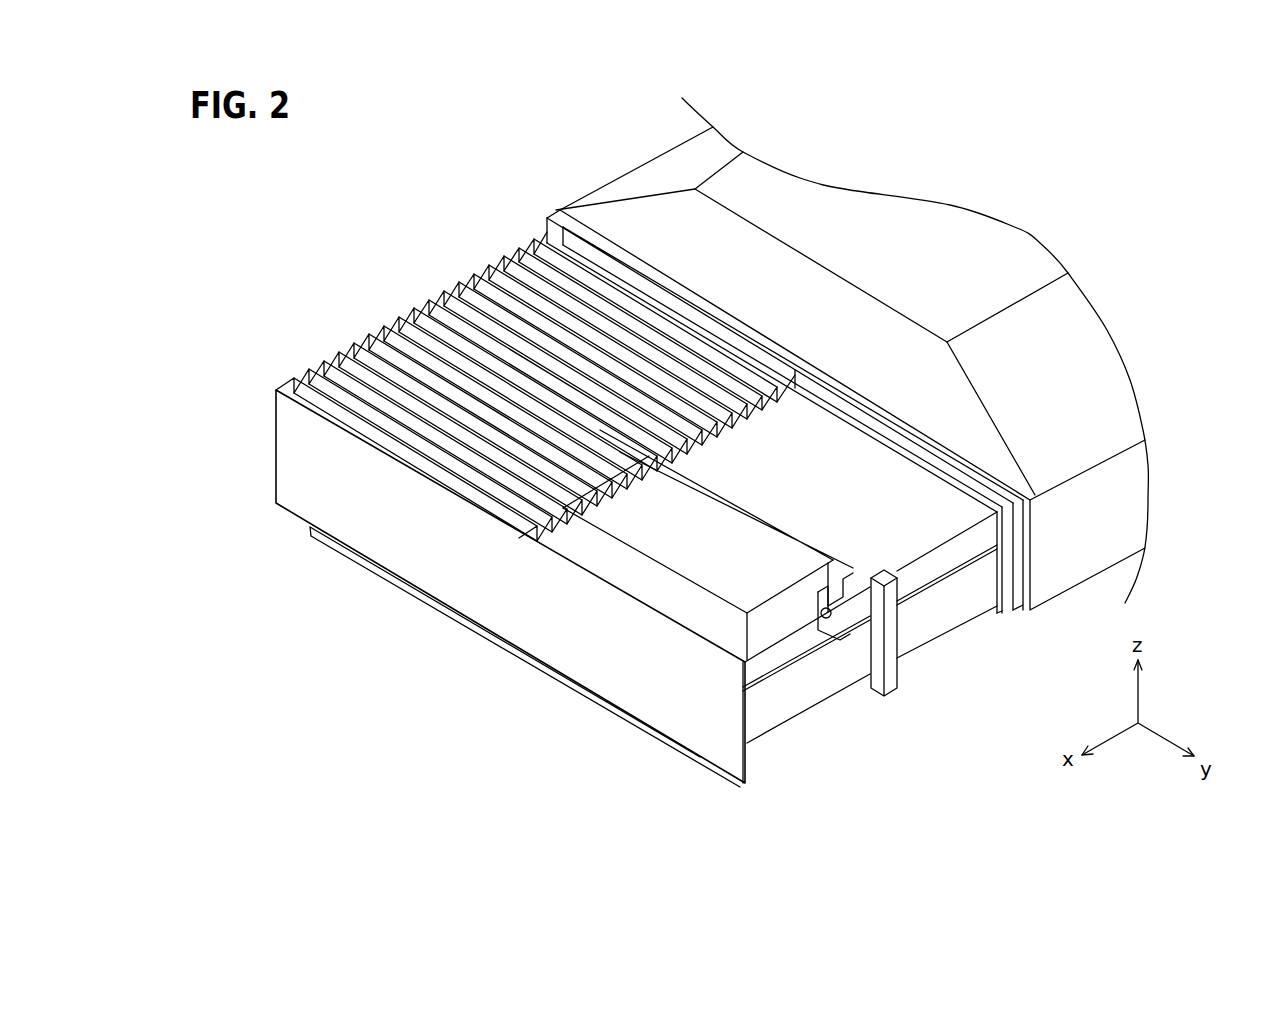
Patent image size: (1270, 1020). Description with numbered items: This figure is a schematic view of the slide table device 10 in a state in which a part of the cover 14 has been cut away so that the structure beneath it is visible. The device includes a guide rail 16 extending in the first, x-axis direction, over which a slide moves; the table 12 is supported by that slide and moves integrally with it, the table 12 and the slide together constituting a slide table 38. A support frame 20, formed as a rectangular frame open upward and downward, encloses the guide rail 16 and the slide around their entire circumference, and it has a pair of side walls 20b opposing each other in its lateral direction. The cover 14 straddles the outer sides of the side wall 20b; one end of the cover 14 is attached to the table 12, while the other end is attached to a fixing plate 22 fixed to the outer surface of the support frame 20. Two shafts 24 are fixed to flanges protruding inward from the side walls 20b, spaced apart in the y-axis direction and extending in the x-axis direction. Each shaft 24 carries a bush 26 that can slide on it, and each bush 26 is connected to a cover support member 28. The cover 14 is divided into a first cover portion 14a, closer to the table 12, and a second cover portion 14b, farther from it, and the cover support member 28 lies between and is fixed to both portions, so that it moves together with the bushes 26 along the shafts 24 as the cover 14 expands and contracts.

The slide table device 10 is at (651, 450).
The table 12 is at (945, 240).
The cover 14 is at (535, 373).
The first cover portion 14a is at (500, 268).
The second cover portion 14b is at (388, 325).
The guide rail 16 is at (683, 548).
The support frame 20 is at (356, 567).
The side wall 20b is at (788, 693).
The fixing plate 22 is at (583, 638).
The shaft 24 is at (940, 545).
The bush 26 is at (862, 604).
The cover support member 28 is at (879, 672).
The slide table 38 is at (663, 150).